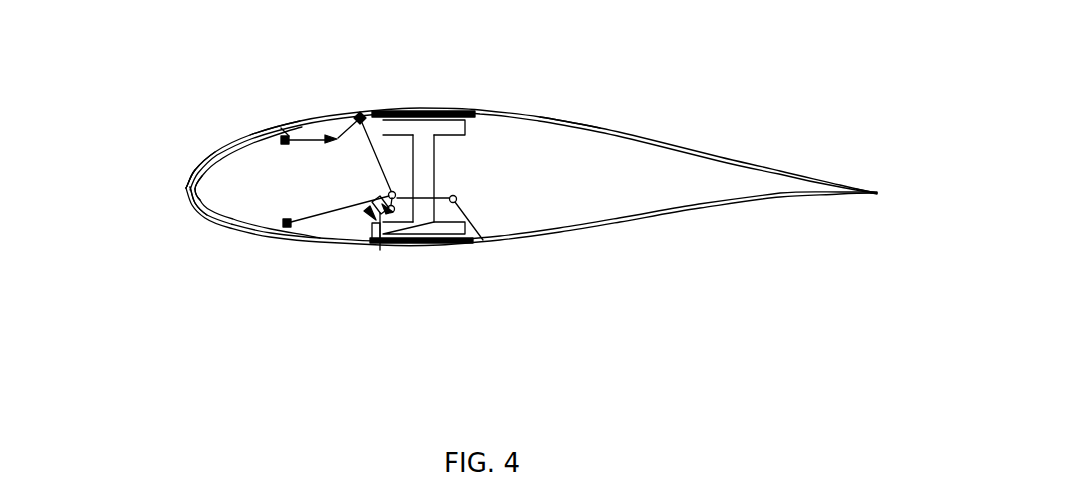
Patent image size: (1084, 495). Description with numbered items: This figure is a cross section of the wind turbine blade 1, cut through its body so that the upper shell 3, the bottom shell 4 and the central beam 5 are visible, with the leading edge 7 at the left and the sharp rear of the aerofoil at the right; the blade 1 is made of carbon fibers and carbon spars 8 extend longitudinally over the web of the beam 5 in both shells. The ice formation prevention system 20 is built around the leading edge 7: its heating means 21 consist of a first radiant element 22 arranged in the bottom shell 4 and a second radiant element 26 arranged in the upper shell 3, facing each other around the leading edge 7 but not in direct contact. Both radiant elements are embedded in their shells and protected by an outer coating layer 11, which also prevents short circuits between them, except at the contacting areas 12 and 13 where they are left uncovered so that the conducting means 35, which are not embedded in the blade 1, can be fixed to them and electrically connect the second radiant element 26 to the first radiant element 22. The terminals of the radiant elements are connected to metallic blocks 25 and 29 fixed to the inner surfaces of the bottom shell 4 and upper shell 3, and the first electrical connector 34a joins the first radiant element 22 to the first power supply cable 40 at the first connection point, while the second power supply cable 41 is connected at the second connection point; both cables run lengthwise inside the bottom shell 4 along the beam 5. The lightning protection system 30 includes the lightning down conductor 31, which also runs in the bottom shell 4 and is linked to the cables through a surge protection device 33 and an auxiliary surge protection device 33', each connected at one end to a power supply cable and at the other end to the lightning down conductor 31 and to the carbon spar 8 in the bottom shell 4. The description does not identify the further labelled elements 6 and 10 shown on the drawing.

The blade 1 is at (903, 193).
The upper shell 3 is at (620, 140).
The bottom shell 4 is at (550, 236).
The beam 5 is at (432, 153).
The trailing edge 6 is at (846, 200).
The leading edge 7 is at (213, 222).
The carbon spar 8 is at (428, 110).
The suction side skin 10 is at (515, 118).
The outer coating layer 11 is at (570, 124).
The contacting area 12 is at (232, 232).
The contacting area 13 is at (222, 155).
The ice formation prevention system 20 is at (183, 172).
The heating means 21 is at (185, 188).
The first radiant element 22 is at (205, 212).
The metallic block 25 is at (287, 219).
The second radiant element 26 is at (285, 128).
The metallic block 29 is at (285, 144).
The lightning protection system 30 is at (476, 197).
The lightning down conductor 31 is at (483, 240).
The surge protection device 33 is at (343, 169).
The auxiliary surge protection device 33' is at (395, 271).
The first electrical connector 34a is at (376, 218).
The conducting means 35 is at (200, 200).
The first power supply cable 40 is at (360, 116).
The second power supply cable 41 is at (393, 212).